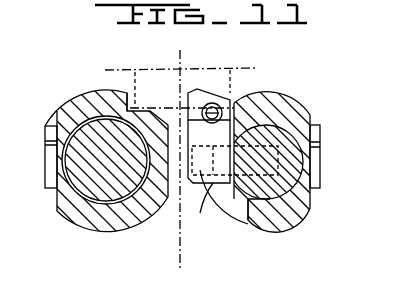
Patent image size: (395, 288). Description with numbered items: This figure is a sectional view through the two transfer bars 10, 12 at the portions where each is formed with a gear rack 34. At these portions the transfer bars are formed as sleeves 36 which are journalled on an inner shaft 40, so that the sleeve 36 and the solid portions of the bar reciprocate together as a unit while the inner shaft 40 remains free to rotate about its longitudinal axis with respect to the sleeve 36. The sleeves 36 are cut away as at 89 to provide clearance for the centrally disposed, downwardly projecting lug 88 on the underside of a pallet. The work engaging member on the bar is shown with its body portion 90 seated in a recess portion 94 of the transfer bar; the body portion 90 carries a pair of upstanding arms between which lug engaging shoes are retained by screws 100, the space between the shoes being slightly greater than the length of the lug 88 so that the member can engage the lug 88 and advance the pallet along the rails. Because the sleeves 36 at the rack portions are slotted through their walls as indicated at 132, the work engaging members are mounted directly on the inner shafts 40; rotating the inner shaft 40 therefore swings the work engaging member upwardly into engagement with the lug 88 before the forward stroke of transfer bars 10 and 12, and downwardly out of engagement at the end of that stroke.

The transfer bar 10 is at (89, 237).
The transfer bar 12 is at (178, 52).
The gear rack 34 is at (52, 173).
The sleeve 36 is at (76, 210).
The inner shaft 40 is at (89, 136).
The lug 88 is at (208, 93).
The cut away 89 is at (126, 90).
The body portion 90 is at (207, 178).
The recess portion 94 is at (220, 212).
The screw 100 is at (232, 110).
The slot 132 is at (248, 222).